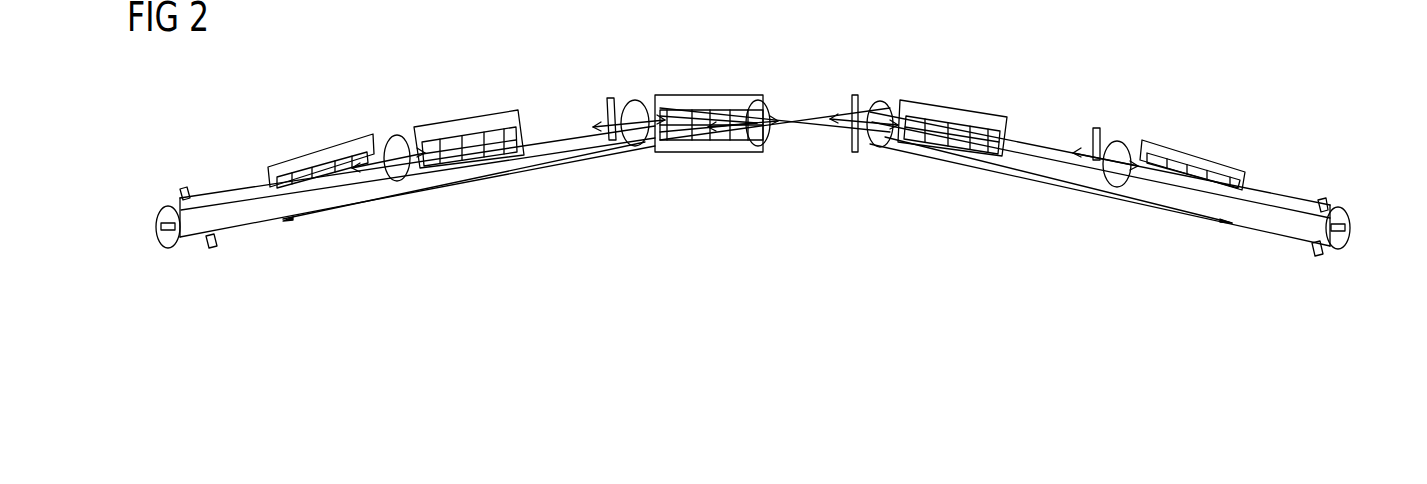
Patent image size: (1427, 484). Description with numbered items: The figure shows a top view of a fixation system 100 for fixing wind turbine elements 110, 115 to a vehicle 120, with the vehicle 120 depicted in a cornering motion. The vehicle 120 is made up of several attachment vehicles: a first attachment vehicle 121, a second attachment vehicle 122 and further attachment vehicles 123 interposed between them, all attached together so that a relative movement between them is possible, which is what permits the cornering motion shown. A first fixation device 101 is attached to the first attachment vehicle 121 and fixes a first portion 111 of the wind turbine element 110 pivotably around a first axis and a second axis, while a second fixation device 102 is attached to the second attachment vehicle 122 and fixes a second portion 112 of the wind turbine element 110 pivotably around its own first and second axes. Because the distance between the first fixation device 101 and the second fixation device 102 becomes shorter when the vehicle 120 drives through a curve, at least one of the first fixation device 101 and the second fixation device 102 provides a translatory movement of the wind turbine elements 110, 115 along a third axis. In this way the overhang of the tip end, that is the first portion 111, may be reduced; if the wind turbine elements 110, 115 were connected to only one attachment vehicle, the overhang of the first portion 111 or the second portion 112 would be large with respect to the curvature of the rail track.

The fixation system 100 is at (298, 106).
The first fixation device 101 is at (772, 134).
The second fixation device 102 is at (171, 234).
The wind turbine element 110 is at (1087, 191).
The first portion 111 is at (670, 98).
The second portion 112 is at (186, 235).
The wind turbine element 115 is at (388, 194).
The vehicle 120 is at (518, 97).
The first attachment vehicle 121 is at (715, 105).
The second attachment vehicle 122 is at (282, 168).
The further attachment vehicle 123 is at (467, 127).